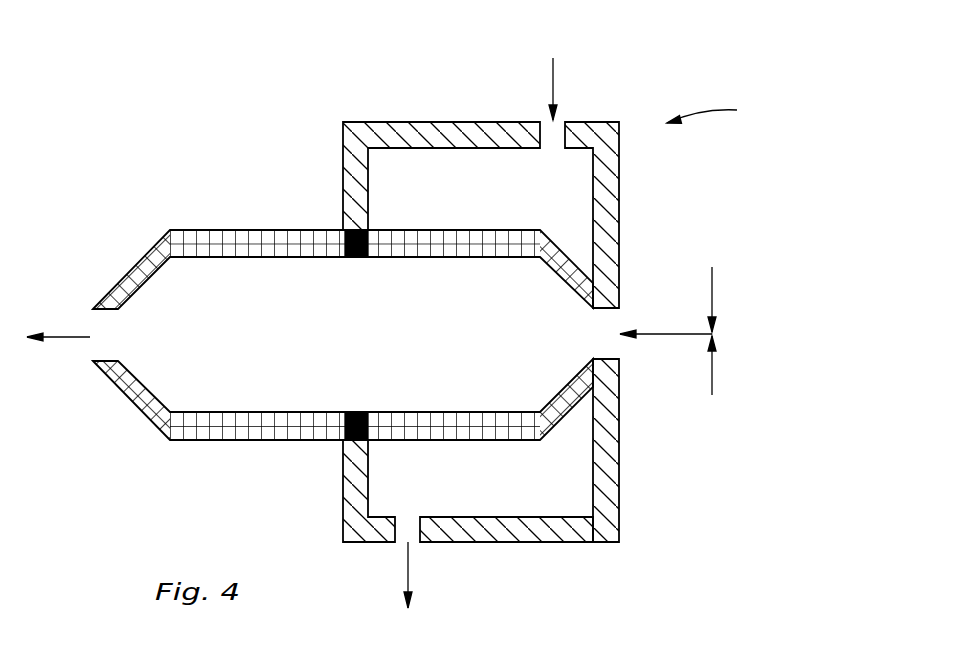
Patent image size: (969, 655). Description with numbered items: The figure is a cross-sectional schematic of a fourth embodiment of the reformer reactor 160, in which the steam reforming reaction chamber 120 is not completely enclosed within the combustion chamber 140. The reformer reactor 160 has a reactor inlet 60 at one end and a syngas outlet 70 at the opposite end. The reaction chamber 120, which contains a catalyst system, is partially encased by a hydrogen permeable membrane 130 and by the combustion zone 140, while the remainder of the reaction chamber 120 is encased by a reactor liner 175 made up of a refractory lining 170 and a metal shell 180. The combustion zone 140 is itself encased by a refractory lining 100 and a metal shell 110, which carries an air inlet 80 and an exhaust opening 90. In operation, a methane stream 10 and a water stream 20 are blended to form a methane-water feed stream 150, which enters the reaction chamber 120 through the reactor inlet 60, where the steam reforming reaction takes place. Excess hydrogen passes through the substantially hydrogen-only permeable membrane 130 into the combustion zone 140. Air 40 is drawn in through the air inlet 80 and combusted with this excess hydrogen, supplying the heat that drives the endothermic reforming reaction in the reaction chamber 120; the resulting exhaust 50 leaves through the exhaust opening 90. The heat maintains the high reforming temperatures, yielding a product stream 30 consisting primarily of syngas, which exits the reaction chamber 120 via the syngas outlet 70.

The methane stream 10 is at (712, 287).
The water stream 20 is at (712, 373).
The product stream 30 is at (72, 340).
The air 40 is at (551, 63).
The exhaust 50 is at (412, 575).
The reactor inlet 60 is at (615, 320).
The syngas outlet 70 is at (95, 325).
The air inlet 80 is at (558, 123).
The exhaust opening 90 is at (402, 543).
The refractory lining 100 is at (603, 185).
The metal shell 110 is at (620, 202).
The steam reforming reaction chamber 120 is at (348, 347).
The hydrogen permeable membrane 130 is at (425, 245).
The combustion zone 140 is at (475, 202).
The methane-water feed stream 150 is at (657, 335).
The reformer reactor 160 is at (725, 110).
The refractory lining 170 is at (220, 228).
The reactor liner 175 is at (197, 410).
The metal shell 180 is at (263, 228).